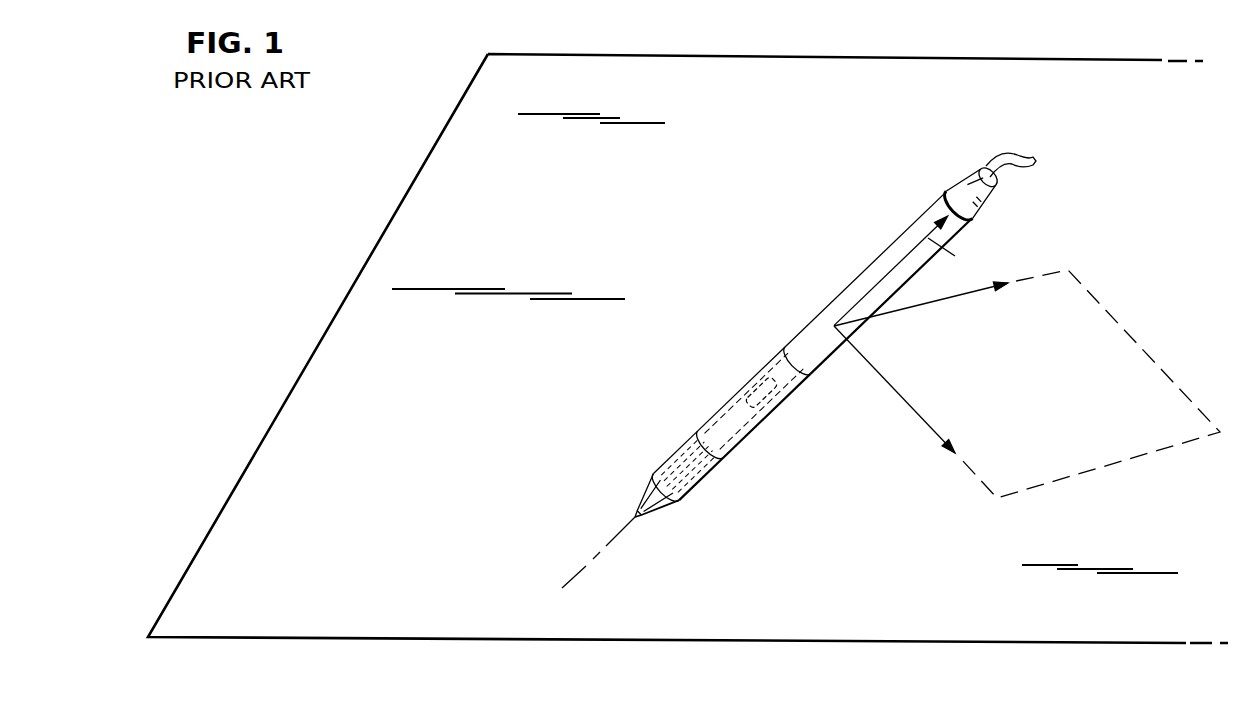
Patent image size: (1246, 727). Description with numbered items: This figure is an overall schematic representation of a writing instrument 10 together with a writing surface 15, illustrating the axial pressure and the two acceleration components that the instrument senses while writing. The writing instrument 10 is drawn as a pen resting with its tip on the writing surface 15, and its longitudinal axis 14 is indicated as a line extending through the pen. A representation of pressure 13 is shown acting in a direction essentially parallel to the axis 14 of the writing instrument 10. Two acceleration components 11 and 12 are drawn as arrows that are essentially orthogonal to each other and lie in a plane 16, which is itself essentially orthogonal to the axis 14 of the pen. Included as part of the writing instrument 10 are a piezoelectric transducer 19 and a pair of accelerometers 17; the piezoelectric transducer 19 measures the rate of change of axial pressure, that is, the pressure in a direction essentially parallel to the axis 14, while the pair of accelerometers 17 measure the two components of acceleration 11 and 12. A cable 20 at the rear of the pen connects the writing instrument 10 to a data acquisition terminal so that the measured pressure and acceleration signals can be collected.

The writing instrument 10 is at (829, 349).
The acceleration component 11 is at (932, 430).
The acceleration component 12 is at (950, 301).
The pressure 13 is at (892, 258).
The axis 14 is at (584, 572).
The writing surface 15 is at (962, 73).
The plane 16 is at (1122, 323).
The pair of accelerometers 17 is at (776, 400).
The piezoelectric transducer 19 is at (677, 463).
The cable 20 is at (1023, 166).